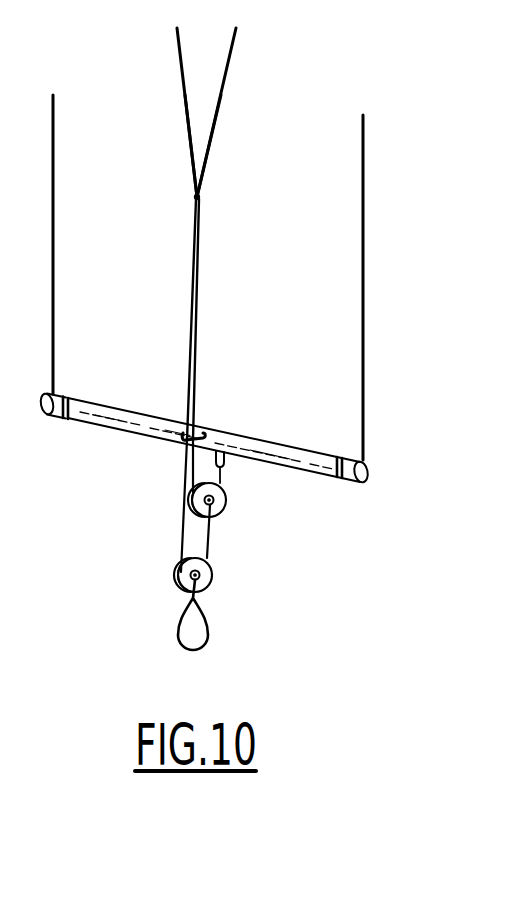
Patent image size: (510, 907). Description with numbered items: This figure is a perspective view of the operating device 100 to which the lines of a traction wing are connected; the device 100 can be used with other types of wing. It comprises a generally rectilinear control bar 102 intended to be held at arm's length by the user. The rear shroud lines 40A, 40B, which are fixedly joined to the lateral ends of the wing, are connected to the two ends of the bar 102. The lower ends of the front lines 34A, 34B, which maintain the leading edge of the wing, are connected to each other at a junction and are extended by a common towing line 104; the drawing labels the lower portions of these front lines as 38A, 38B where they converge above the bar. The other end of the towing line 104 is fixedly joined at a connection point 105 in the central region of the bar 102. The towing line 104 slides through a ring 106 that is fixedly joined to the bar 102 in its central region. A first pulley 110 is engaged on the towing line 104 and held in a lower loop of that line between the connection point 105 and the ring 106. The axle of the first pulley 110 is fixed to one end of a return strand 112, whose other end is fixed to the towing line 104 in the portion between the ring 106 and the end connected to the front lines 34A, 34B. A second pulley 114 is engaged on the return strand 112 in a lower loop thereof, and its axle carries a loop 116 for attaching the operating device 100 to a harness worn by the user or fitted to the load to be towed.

The operating device 100 is at (140, 491).
The front line 34A is at (176, 85).
The front line 34B is at (237, 88).
The first cable lower portion 38A is at (190, 142).
The second cable lower portion 38B is at (206, 143).
The rear shroud line 40A is at (54, 205).
The rear shroud line 40B is at (362, 210).
The control bar 102 is at (110, 408).
The common towing line 104 is at (197, 287).
The connection point 105 is at (228, 449).
The ring 106 is at (204, 434).
The first pulley 110 is at (223, 502).
The return strand 112 is at (211, 539).
The second pulley 114 is at (209, 578).
The loop 116 is at (208, 632).